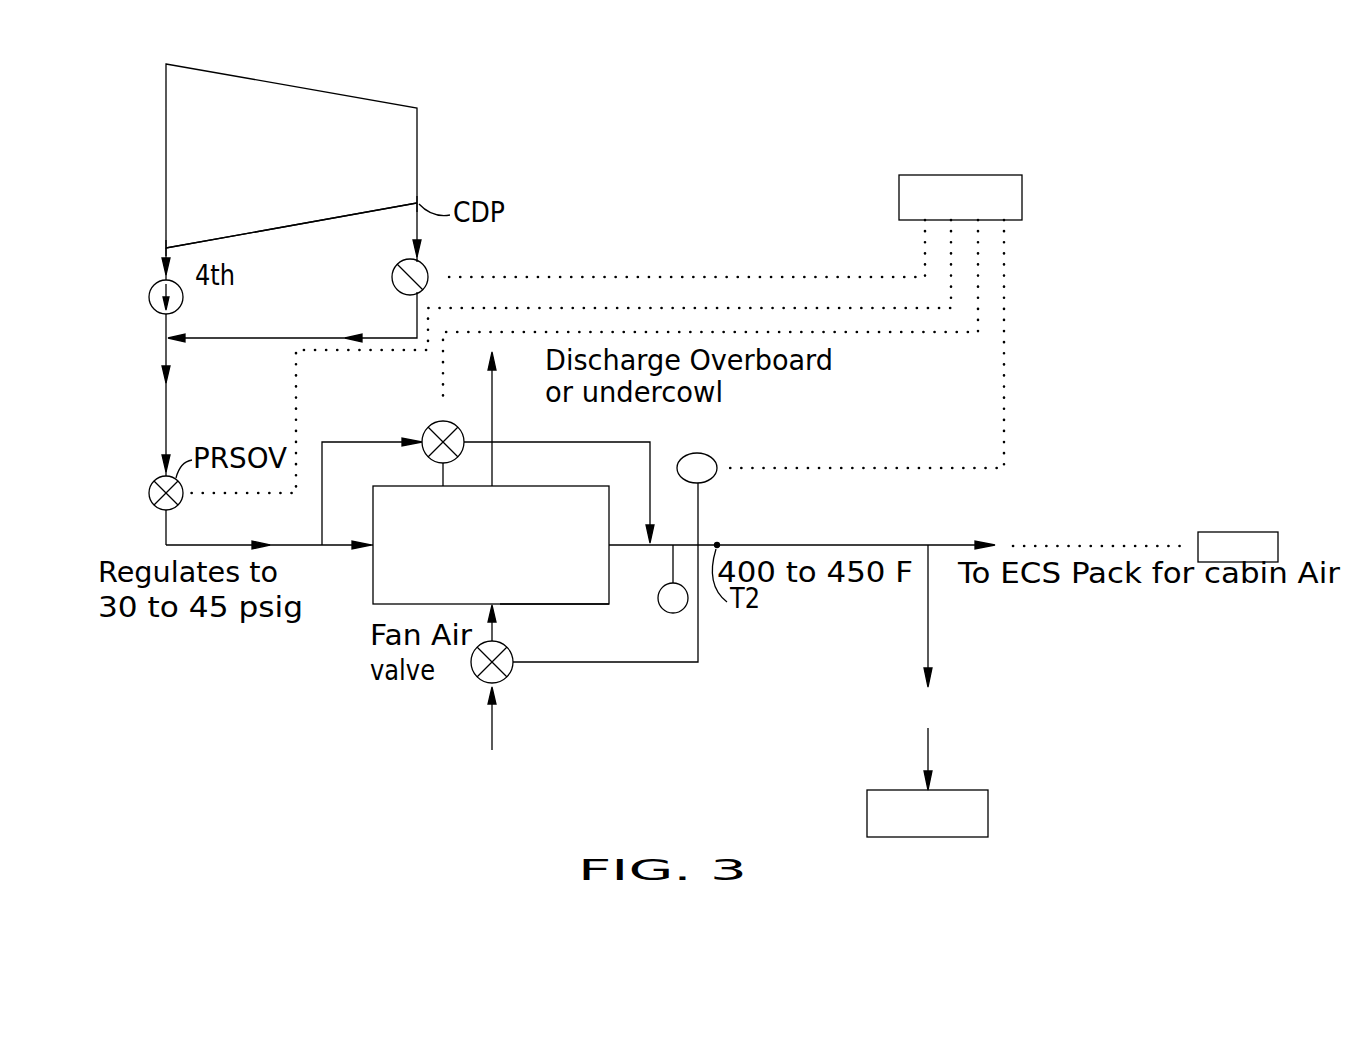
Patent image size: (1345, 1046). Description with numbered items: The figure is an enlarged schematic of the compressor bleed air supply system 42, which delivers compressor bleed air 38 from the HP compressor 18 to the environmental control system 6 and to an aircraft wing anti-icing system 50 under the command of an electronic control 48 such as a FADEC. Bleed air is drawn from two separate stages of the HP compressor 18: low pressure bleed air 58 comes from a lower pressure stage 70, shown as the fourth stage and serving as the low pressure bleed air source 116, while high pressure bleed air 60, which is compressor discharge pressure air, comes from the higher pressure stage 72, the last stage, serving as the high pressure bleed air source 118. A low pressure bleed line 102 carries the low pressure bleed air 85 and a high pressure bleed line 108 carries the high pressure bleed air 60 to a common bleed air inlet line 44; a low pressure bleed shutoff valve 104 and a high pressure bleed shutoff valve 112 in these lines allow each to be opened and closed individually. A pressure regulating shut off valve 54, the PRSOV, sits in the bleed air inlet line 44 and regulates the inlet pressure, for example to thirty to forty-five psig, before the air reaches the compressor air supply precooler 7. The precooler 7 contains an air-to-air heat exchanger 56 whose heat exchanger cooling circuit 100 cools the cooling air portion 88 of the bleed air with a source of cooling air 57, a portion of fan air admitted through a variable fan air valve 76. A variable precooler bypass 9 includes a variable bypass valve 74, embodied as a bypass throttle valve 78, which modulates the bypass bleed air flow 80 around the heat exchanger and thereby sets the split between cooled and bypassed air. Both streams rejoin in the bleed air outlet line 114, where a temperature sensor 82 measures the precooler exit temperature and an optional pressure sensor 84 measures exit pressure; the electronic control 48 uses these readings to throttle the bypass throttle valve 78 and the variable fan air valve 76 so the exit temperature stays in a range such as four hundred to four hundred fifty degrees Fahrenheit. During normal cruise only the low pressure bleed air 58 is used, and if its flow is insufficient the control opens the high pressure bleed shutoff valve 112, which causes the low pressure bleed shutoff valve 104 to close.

The HP compressor 18 is at (305, 85).
The compressor bleed air supply system 42 is at (580, 205).
The electronic control 48 is at (983, 175).
The low pressure bleed air source 116 is at (164, 246).
The lower pressure stage 70 is at (168, 244).
The higher pressure stage 72 is at (415, 202).
The high pressure bleed air source 118 is at (419, 202).
The low pressure bleed shutoff valve 104 is at (150, 290).
The low pressure bleed air 58 is at (170, 262).
The high pressure bleed shutoff valve 112 is at (396, 268).
The high pressure bleed air 60 is at (362, 336).
The low pressure bleed line 102 is at (162, 325).
The high pressure bleed line 108 is at (270, 337).
The low pressure bleed air 85 is at (168, 368).
The variable bypass valve 74 is at (443, 421).
The variable precooler bypass 9 is at (404, 424).
The bypass bleed air flow 80 is at (392, 440).
The bypass throttle valve 78 is at (432, 457).
The pressure regulating shut off valve 54 is at (150, 486).
The bleed air inlet line 44 is at (162, 530).
The compressor bleed air 38 is at (250, 545).
The cooling air portion 88 is at (350, 550).
The heat exchanger cooling circuit 100 is at (513, 558).
The air-to-air heat exchanger 56 is at (560, 606).
The pressure sensor 84 is at (675, 613).
The temperature sensor 82 is at (718, 478).
The bleed air outlet line 114 is at (797, 544).
The environmental control system 6 is at (1235, 532).
The variable fan air valve 76 is at (505, 680).
The source of cooling air 57 is at (515, 801).
The aircraft wing anti-icing system 50 is at (955, 790).
The compressor air supply precooler 7 is at (290, 690).